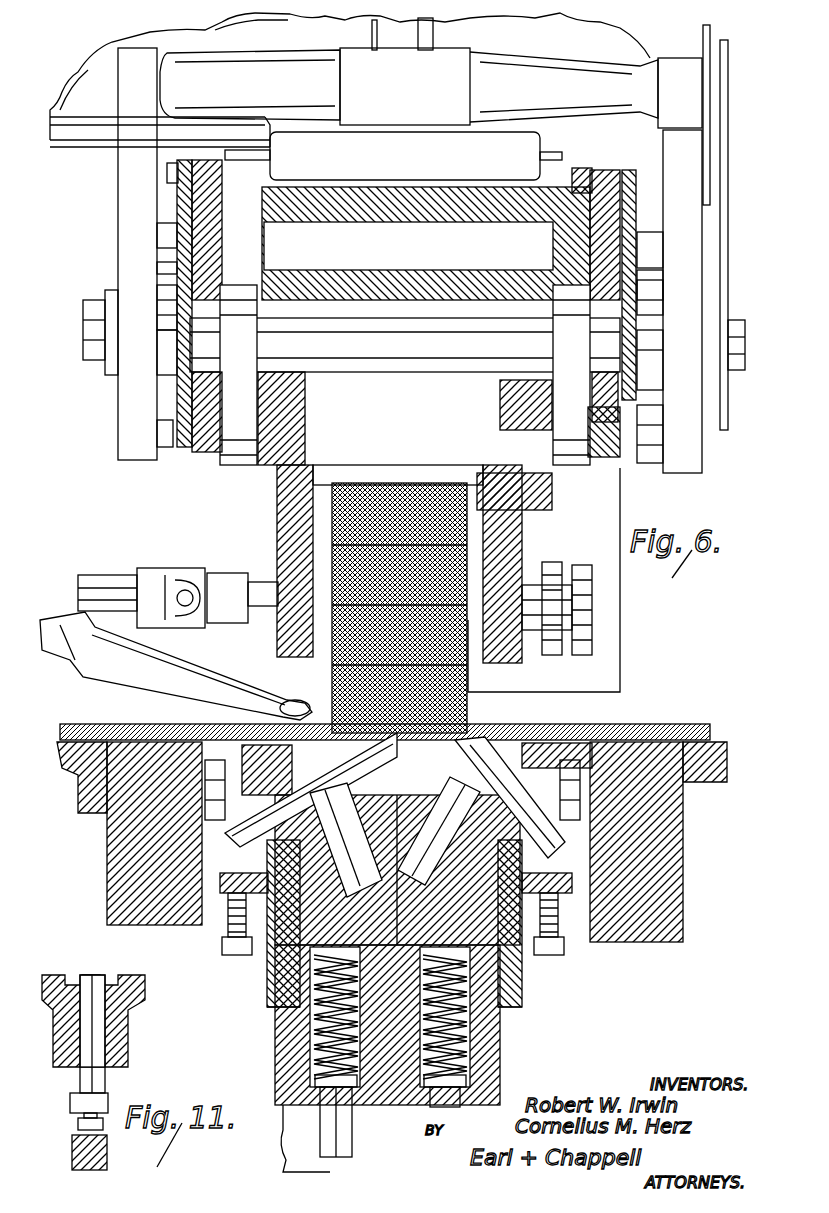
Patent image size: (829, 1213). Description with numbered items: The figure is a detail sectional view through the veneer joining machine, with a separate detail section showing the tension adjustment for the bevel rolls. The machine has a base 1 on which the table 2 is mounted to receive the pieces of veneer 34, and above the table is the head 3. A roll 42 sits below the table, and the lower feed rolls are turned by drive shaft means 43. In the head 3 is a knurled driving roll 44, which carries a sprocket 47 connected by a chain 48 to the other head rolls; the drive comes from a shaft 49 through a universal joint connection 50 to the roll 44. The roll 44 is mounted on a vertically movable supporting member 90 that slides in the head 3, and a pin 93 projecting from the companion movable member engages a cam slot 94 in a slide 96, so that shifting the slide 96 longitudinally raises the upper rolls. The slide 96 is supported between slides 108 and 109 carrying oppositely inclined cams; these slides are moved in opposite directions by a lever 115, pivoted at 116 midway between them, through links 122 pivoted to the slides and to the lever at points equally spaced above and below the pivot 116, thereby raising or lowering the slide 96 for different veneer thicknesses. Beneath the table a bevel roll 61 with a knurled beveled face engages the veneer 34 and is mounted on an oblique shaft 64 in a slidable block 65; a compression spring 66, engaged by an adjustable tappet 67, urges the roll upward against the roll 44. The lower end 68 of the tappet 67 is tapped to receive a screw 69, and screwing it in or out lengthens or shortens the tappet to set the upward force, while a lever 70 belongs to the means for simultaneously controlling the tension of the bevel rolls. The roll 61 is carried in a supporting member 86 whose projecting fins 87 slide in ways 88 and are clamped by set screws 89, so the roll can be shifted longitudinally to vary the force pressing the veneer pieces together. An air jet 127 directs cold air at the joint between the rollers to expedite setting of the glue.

In FIG. 6, the base 1 is at (682, 860).
In FIG. 6, the table 2 is at (623, 165).
In FIG. 6, the head 3 is at (358, 210).
In FIG. 6, the pieces of veneer 34 is at (88, 720).
In FIG. 6, the roll 42 is at (468, 747).
In FIG. 6, the drive shaft means 43 is at (95, 798).
In FIG. 6, the knurled driving roll 44 is at (395, 480).
In FIG. 6, the sprocket 47 is at (553, 637).
In FIG. 6, the chain 48 is at (578, 565).
In FIG. 6, the shaft 49 is at (90, 588).
In FIG. 6, the universal joint connection 50 is at (172, 573).
In FIG. 6, the bevel roll 61 is at (323, 727).
In FIG. 6, the oblique shaft 64 is at (272, 930).
In FIG. 6, the slidable block 65 is at (277, 987).
In FIG. 6, the compression spring 66 is at (310, 1043).
In FIG. 6, the adjustable tappet 67 is at (322, 1075).
In FIG. 11, the adjustable tappet 67 is at (97, 1050).
In FIG. 11, the lower end of tappet 68 is at (102, 1105).
In FIG. 11, the screw 69 is at (82, 1122).
In FIG. 11, the lever 70 is at (72, 1148).
In FIG. 6, the supporting member 86 is at (248, 895).
In FIG. 6, the projecting fin 87 is at (217, 917).
In FIG. 6, the way 88 is at (567, 897).
In FIG. 6, the set screw 89 is at (218, 945).
In FIG. 6, the vertically movable supporting member 90 is at (422, 277).
In FIG. 6, the pin 93 is at (228, 362).
In FIG. 6, the cam slot 94 is at (200, 312).
In FIG. 6, the slide 96 is at (205, 273).
In FIG. 6, the slide 108 is at (230, 247).
In FIG. 6, the slide 109 is at (210, 413).
In FIG. 6, the lever 115 is at (392, 42).
In FIG. 6, the pivot 116 is at (88, 300).
In FIG. 6, the link 122 is at (165, 242).
In FIG. 6, the air jet 127 is at (207, 692).